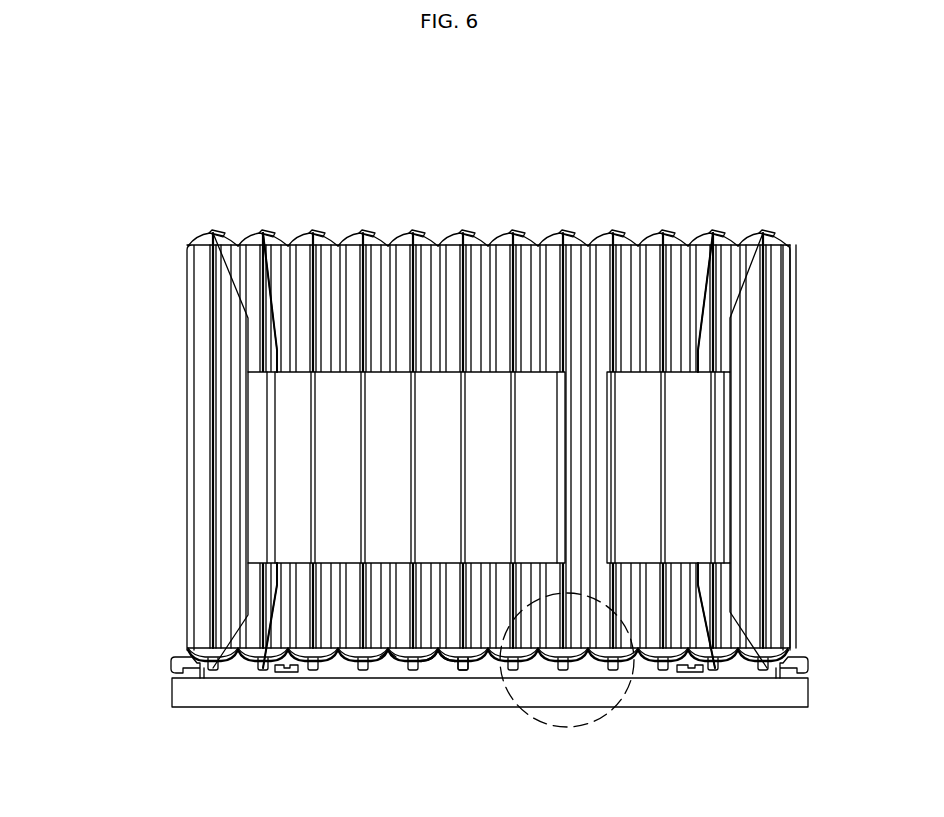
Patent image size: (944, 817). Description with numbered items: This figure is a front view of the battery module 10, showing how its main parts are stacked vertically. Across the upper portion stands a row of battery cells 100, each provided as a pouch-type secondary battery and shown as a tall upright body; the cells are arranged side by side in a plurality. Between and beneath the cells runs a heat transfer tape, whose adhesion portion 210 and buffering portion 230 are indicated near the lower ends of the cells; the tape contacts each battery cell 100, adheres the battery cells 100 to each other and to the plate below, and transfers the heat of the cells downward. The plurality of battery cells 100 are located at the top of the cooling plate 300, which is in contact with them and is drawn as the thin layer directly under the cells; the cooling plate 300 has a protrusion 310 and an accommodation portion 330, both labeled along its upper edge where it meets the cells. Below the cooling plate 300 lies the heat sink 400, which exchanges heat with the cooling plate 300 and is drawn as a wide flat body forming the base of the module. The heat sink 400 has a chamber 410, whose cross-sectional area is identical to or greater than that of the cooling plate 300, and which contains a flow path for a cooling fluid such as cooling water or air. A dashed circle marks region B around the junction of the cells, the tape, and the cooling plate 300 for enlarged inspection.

The battery module 10 is at (271, 146).
The battery cell 100 is at (186, 226).
The adhesion portion 210 is at (388, 620).
The buffering portion 230 is at (390, 662).
The protrusion 310 is at (437, 665).
The accommodation portion 330 is at (462, 664).
The cooling plate 300 is at (157, 653).
The heat sink 400 is at (157, 692).
The chamber 410 is at (230, 705).
The detail region B is at (567, 728).